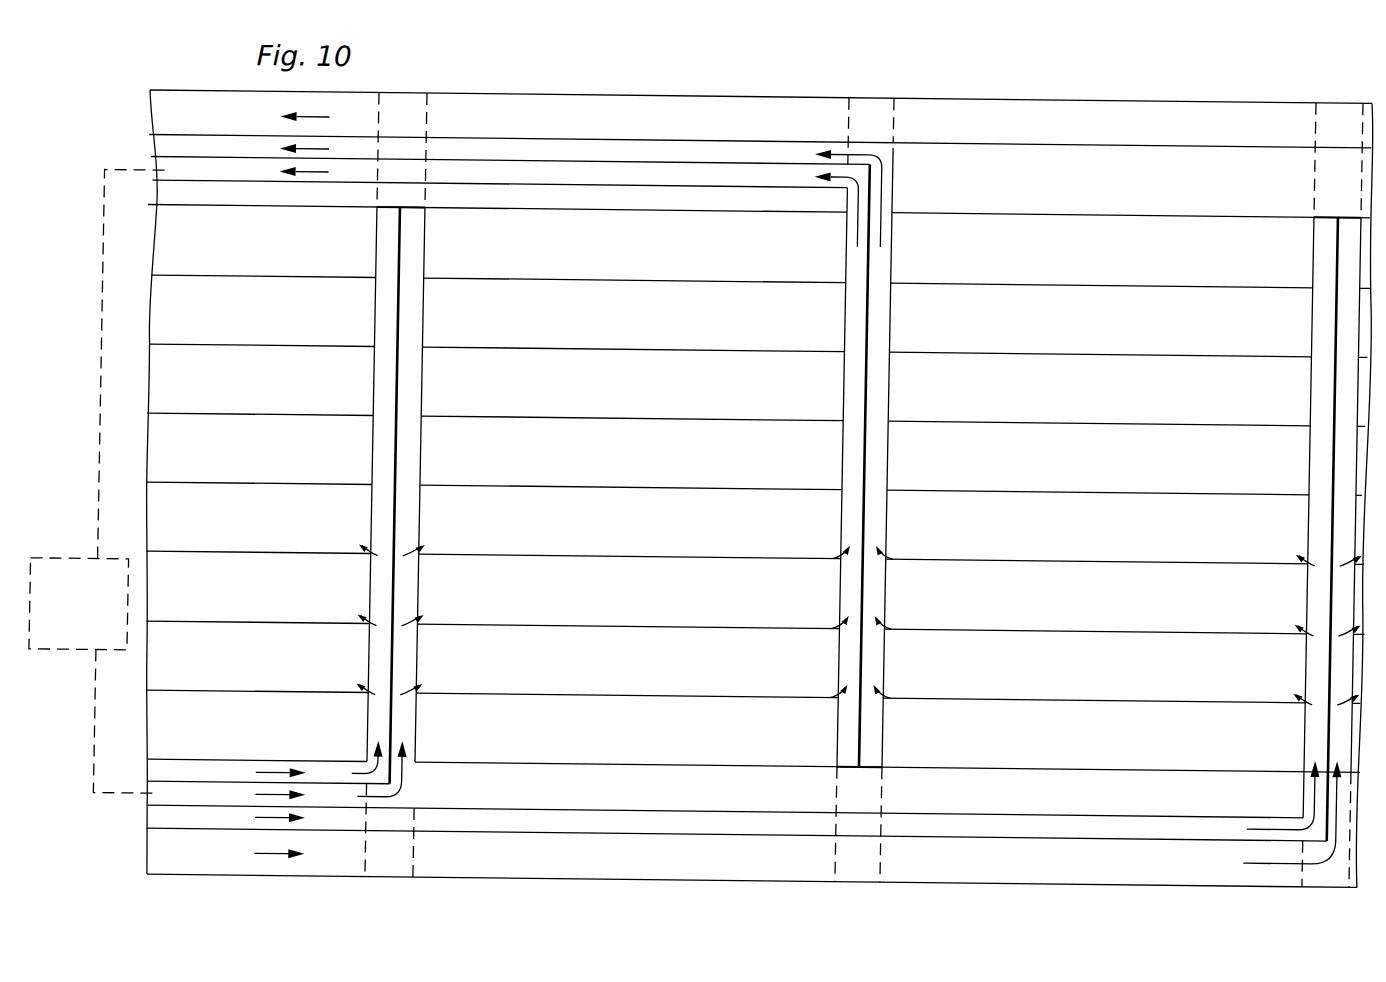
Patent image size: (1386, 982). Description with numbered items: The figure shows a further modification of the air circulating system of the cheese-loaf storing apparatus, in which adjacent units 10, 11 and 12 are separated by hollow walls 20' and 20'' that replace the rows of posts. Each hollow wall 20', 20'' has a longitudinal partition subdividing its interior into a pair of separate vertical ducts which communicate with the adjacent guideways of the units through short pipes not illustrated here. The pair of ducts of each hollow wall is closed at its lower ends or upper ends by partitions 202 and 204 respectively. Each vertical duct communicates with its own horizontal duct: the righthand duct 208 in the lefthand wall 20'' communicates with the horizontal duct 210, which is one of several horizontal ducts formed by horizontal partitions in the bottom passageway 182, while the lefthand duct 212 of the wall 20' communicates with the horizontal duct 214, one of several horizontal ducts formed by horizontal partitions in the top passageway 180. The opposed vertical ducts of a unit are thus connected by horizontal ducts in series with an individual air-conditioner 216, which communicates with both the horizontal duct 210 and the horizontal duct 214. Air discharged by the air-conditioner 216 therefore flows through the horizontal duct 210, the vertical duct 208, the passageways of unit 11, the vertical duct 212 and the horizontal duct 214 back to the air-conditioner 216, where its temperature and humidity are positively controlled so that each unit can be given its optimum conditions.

The unit 10 is at (273, 459).
The unit 11 is at (622, 460).
The unit 12 is at (1115, 462).
The hollow wall 20' is at (893, 245).
The hollow wall 20'' is at (856, 489).
The horizontal passageway 180 is at (946, 158).
The horizontal passageway 182 is at (492, 862).
The partition 202 is at (882, 760).
The partition 204 is at (412, 207).
The vertical duct 208 is at (421, 587).
The horizontal duct 210 is at (178, 795).
The vertical duct 212 is at (855, 380).
The horizontal duct 214 is at (531, 173).
The air-conditioner 216 is at (66, 573).